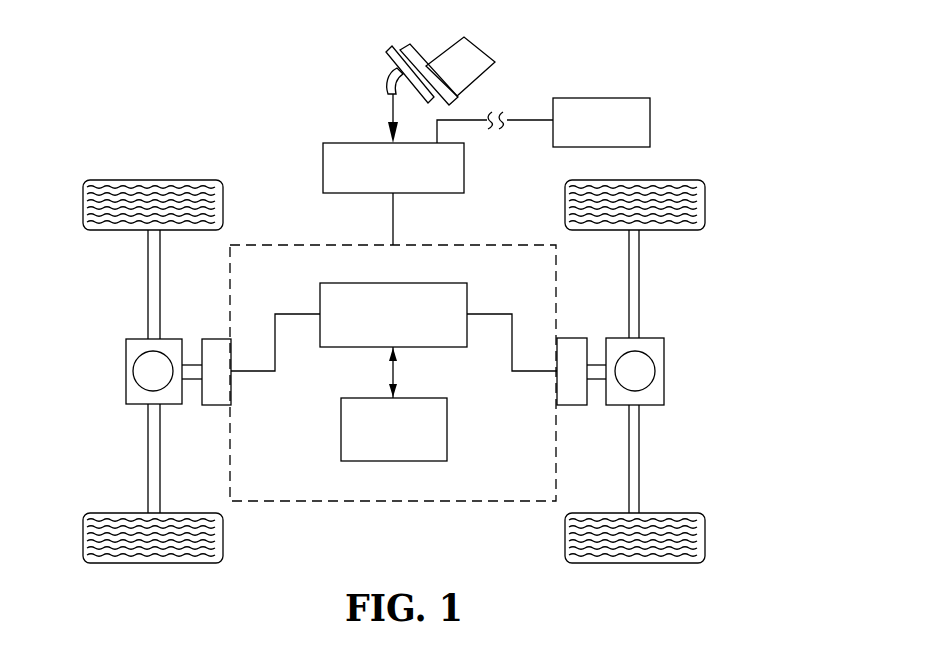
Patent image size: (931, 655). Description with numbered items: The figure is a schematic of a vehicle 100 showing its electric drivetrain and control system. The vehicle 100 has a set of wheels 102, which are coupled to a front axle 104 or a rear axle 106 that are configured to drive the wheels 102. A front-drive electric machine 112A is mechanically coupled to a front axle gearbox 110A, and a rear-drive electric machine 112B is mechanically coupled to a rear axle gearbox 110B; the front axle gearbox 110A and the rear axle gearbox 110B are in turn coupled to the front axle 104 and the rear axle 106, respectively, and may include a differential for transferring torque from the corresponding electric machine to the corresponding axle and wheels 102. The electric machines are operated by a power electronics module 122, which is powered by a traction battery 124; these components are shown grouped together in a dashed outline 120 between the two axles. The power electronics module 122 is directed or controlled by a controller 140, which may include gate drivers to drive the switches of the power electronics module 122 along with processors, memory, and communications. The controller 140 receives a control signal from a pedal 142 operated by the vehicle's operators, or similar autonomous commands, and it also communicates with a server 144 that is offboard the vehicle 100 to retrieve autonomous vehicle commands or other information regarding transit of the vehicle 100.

The vehicle 100 is at (724, 50).
The wheels 102 is at (128, 180).
The front axle 104 is at (640, 312).
The rear axle 106 is at (147, 310).
The front axle gearbox 110A is at (665, 382).
The rear axle gearbox 110B is at (126, 382).
The front-drive electric machine 112A is at (573, 338).
The rear-drive electric machine 112B is at (218, 338).
The electrical power system 120 is at (430, 232).
The power electronics module 122 is at (467, 302).
The traction battery 124 is at (447, 432).
The controller 140 is at (360, 143).
The pedal 142 is at (386, 58).
The server 144 is at (600, 98).